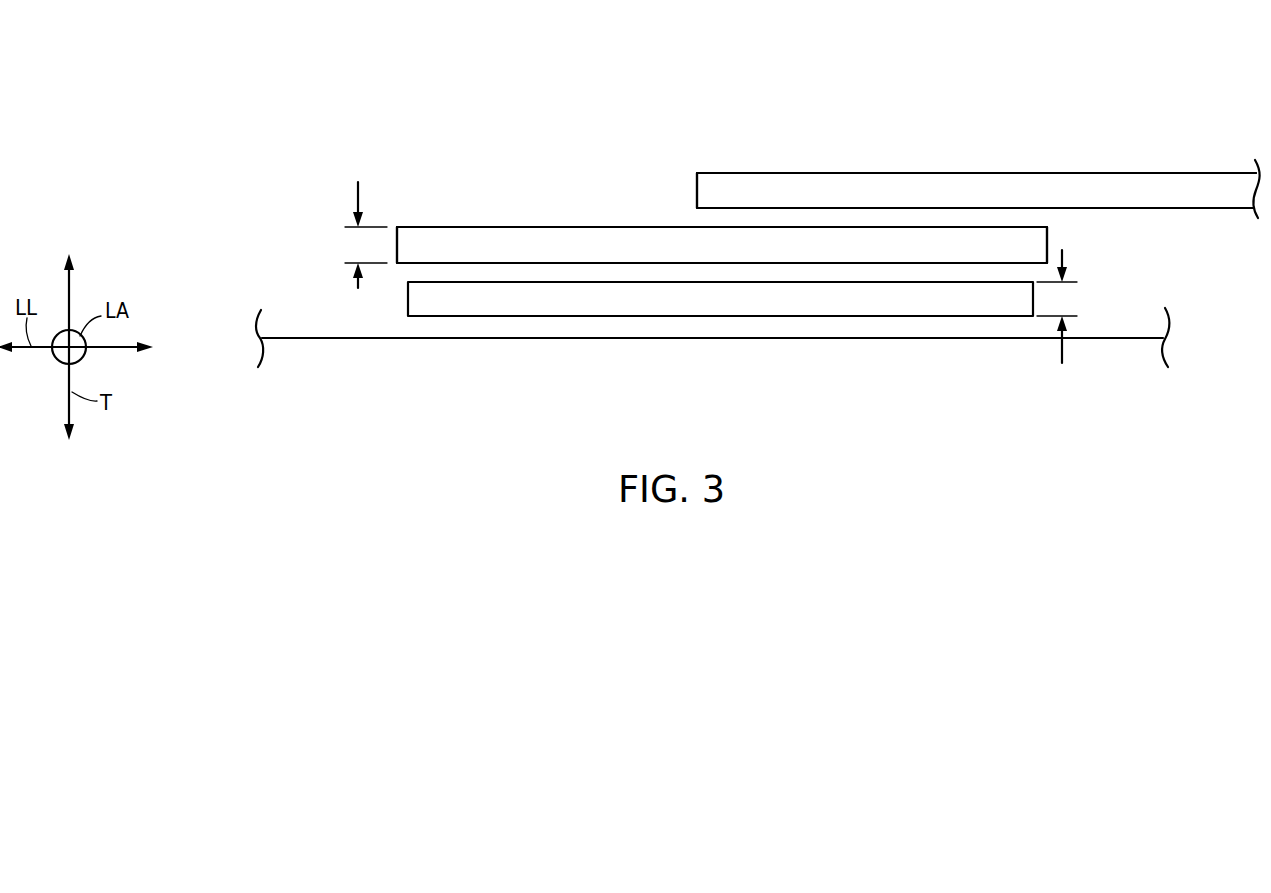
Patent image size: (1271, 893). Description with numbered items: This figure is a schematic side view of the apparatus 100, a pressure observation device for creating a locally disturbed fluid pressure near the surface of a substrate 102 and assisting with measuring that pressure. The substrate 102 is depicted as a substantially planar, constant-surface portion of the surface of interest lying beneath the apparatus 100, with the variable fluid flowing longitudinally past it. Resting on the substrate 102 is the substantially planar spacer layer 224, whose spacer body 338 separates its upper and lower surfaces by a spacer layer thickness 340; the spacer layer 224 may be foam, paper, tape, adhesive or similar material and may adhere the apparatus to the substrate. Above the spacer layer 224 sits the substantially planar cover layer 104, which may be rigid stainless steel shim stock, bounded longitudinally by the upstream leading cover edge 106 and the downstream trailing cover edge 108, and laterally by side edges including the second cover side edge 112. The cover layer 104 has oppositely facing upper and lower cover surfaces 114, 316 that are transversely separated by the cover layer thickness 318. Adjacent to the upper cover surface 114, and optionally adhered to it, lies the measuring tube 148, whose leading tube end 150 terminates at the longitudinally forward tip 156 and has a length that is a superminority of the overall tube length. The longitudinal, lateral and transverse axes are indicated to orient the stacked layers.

The apparatus 100 is at (294, 74).
The substrate 102 is at (320, 340).
The cover layer 104 is at (581, 211).
The leading cover edge 106 is at (396, 250).
The trailing cover edge 108 is at (1048, 246).
The second cover side edge 112 is at (522, 248).
The upper cover surface 114 is at (432, 227).
The measuring tube 148 is at (1062, 170).
The leading tube end 150 is at (715, 166).
The longitudinally forward tip 156 is at (696, 190).
The spacer layer 224 is at (822, 342).
The lower cover surface 316 is at (937, 264).
The cover layer thickness 318 is at (357, 197).
The spacer body 338 is at (881, 299).
The spacer layer thickness 340 is at (1063, 352).